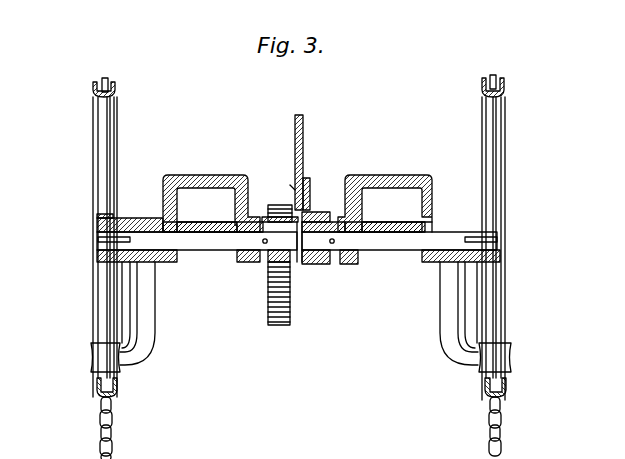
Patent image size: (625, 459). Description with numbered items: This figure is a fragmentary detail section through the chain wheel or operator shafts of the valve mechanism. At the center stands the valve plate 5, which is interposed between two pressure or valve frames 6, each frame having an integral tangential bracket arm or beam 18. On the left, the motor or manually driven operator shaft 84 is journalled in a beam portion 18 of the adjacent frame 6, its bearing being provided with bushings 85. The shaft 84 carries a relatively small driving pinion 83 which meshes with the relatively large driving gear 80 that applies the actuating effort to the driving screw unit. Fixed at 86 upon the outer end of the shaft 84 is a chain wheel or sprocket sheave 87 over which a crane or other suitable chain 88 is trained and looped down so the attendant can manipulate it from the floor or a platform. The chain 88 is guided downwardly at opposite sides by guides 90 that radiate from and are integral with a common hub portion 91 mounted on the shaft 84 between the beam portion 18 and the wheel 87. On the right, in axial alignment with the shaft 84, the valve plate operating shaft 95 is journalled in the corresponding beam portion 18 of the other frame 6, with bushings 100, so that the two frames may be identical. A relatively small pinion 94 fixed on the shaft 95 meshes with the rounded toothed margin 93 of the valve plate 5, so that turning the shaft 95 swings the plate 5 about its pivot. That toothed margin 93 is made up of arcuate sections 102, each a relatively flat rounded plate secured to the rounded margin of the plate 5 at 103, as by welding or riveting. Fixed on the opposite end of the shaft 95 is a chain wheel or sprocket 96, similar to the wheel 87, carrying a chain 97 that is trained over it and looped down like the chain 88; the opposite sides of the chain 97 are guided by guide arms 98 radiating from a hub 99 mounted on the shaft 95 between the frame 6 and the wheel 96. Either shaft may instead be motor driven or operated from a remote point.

The valve plate 5 is at (303, 135).
The valve frame 6 is at (300, 289).
The bracket arm 18 is at (163, 185).
The driving gear 80 is at (268, 310).
The driving pinion 83 is at (278, 201).
The operator shaft 84 is at (225, 250).
The bushing 85 is at (237, 226).
The fixing point 86 is at (97, 255).
The chain wheel 87 is at (93, 180).
The chain 88 is at (104, 80).
The guide 90 is at (91, 358).
The hub portion 91 is at (140, 267).
The toothed margin 93 is at (312, 210).
The pinion 94 is at (318, 264).
The valve plate operating shaft 95 is at (405, 250).
The chain wheel 96 is at (115, 93).
The chain 97 is at (501, 418).
The guide arm 98 is at (452, 347).
The hub 99 is at (440, 264).
The bushing 100 is at (350, 264).
The arcuate section 102 is at (308, 182).
The securing point 103 is at (294, 192).